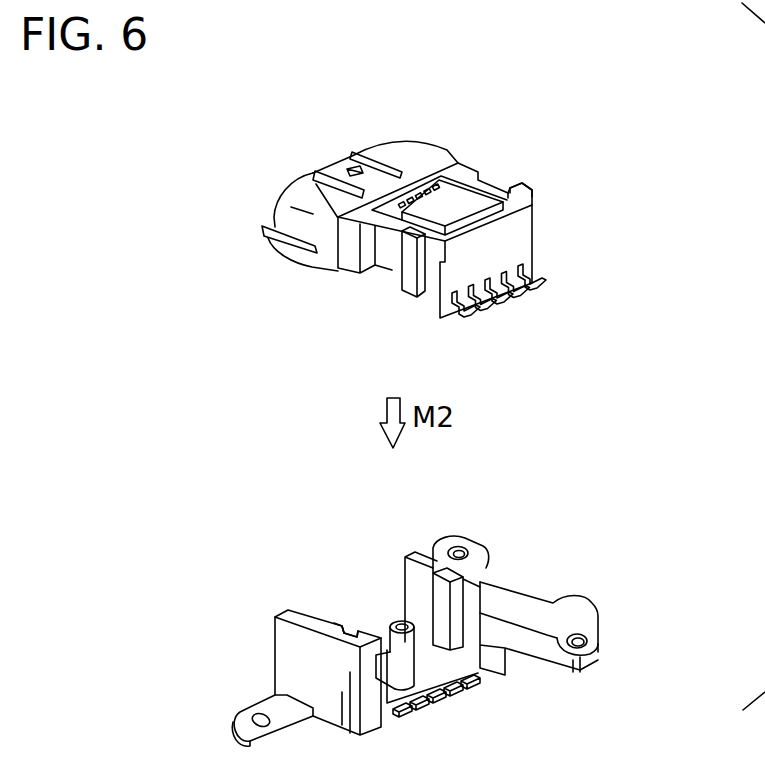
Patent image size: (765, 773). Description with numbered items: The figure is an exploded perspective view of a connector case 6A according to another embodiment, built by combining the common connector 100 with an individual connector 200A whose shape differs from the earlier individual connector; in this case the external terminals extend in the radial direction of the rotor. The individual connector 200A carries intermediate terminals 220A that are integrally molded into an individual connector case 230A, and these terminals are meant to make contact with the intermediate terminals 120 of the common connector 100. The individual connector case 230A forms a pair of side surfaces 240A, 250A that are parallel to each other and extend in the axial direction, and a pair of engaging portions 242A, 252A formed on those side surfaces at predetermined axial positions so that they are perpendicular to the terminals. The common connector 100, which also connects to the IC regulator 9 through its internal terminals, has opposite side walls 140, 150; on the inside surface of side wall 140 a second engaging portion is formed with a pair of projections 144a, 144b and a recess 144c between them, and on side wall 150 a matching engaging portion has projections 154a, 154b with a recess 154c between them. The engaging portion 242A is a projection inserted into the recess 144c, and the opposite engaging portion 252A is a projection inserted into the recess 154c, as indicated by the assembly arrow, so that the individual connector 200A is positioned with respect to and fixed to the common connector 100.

The individual connector 200A is at (515, 72).
The individual connector case 230A is at (398, 148).
The IC regulator 9 is at (450, 205).
The side surface 240A is at (485, 183).
The engaging portion 242A is at (533, 191).
The connector case 6A is at (610, 296).
The side surface 250A is at (390, 266).
The engaging portion 252A is at (400, 290).
The intermediate terminals 220A is at (480, 318).
The common connector 100 is at (590, 496).
The side wall 150 is at (290, 666).
The projection 154a is at (336, 624).
The projection 154b is at (384, 627).
The recess 154c is at (350, 636).
The side wall 140 is at (412, 556).
The projection 144a is at (441, 586).
The projection 144b is at (475, 583).
The recess 144c is at (486, 548).
The intermediate terminals 120 is at (443, 698).